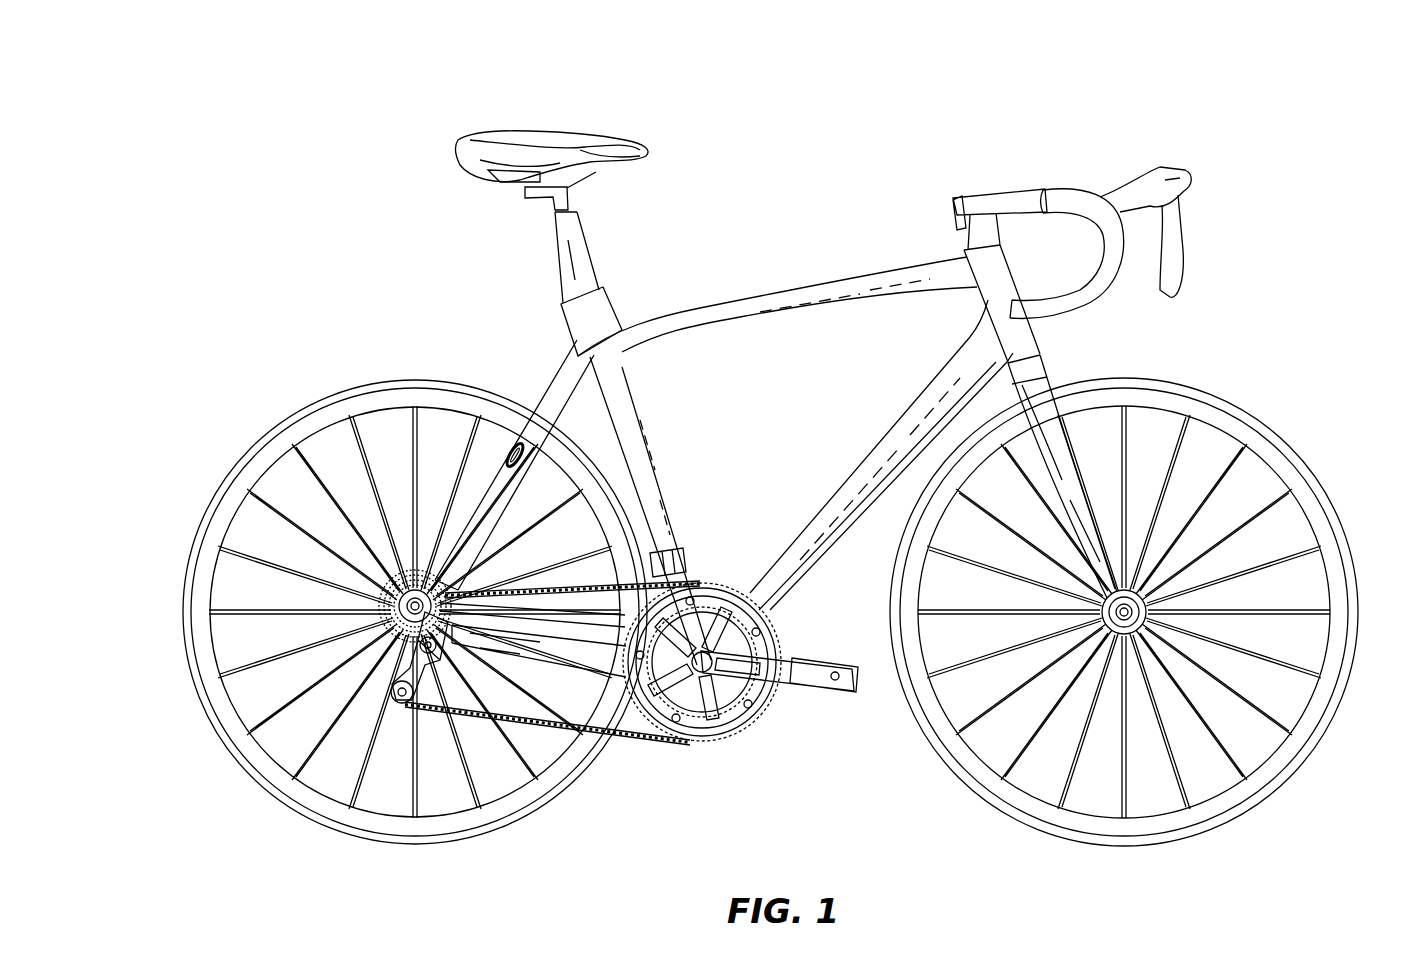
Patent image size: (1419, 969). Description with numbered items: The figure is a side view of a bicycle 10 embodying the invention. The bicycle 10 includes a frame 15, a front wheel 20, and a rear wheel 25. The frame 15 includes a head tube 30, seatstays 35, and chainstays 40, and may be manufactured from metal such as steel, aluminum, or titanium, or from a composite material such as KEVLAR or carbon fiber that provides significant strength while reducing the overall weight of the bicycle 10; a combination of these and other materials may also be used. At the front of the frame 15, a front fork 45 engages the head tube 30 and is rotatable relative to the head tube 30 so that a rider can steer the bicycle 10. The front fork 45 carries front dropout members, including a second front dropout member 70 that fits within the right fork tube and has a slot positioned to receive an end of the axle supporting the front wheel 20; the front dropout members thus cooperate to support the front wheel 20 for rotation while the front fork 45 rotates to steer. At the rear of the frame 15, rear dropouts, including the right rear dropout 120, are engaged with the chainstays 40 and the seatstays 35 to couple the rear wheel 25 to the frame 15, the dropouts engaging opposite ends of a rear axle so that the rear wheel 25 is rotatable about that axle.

The bicycle 10 is at (898, 97).
The frame 15 is at (714, 310).
The front wheel 20 is at (1285, 458).
The rear wheel 25 is at (267, 457).
The head tube 30 is at (1012, 340).
The seatstays 35 is at (548, 390).
The chainstays 40 is at (553, 642).
The front fork 45 is at (1052, 453).
The second front dropout member 70 is at (1022, 688).
The right rear dropout 120 is at (393, 640).